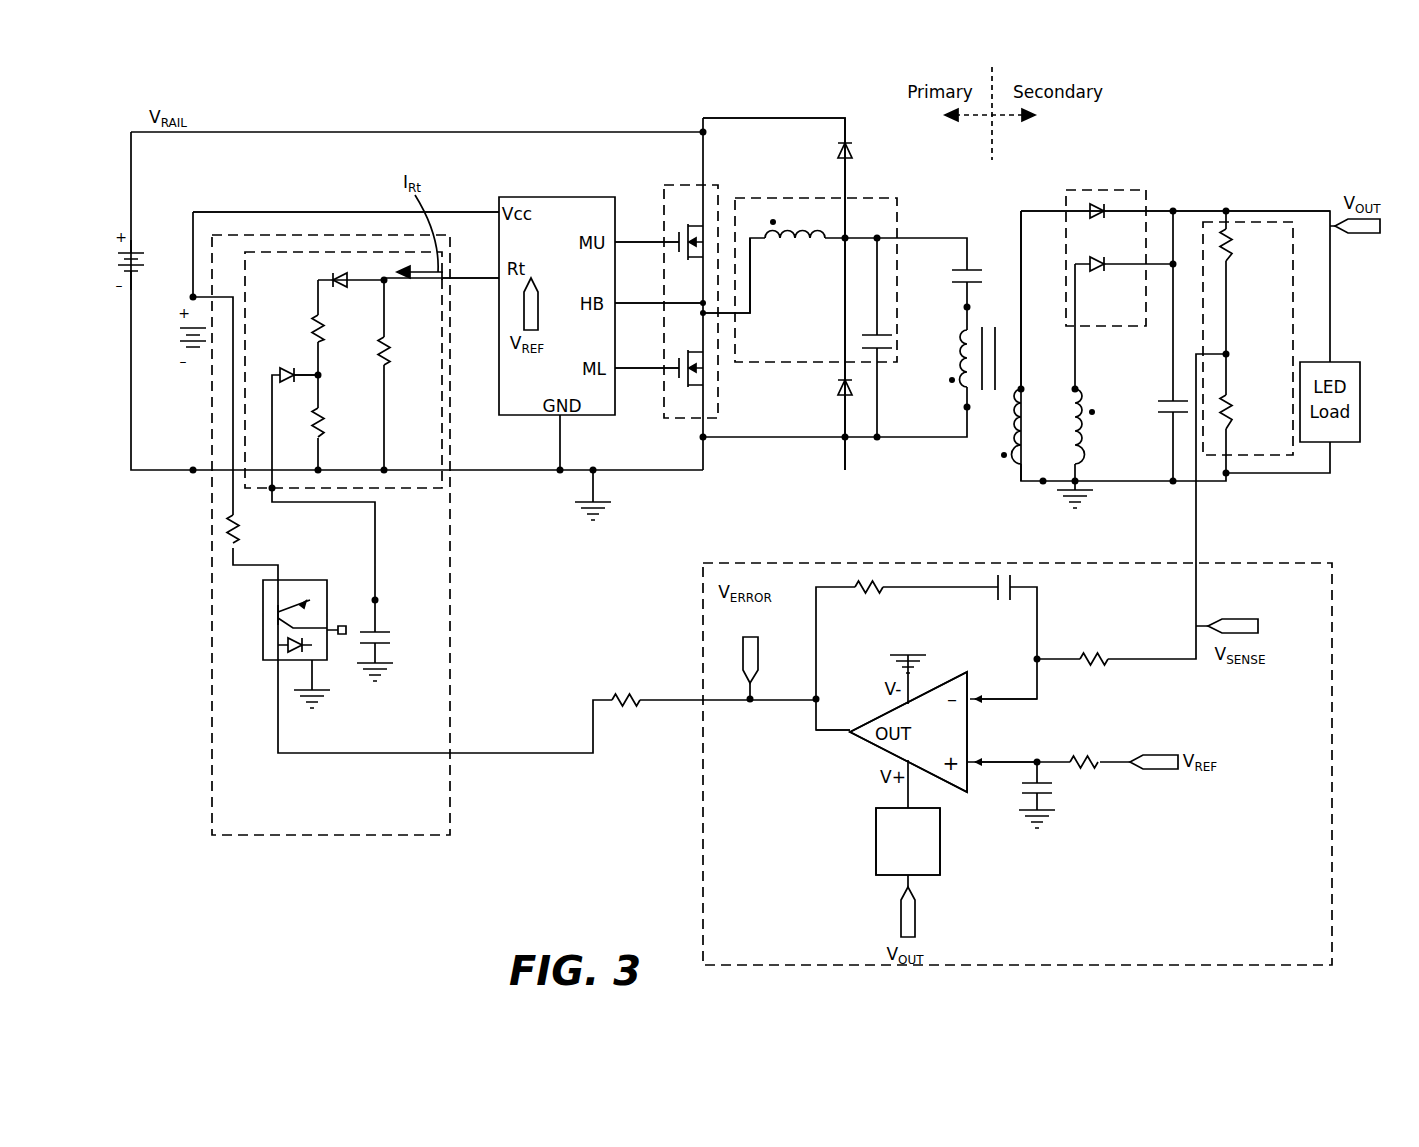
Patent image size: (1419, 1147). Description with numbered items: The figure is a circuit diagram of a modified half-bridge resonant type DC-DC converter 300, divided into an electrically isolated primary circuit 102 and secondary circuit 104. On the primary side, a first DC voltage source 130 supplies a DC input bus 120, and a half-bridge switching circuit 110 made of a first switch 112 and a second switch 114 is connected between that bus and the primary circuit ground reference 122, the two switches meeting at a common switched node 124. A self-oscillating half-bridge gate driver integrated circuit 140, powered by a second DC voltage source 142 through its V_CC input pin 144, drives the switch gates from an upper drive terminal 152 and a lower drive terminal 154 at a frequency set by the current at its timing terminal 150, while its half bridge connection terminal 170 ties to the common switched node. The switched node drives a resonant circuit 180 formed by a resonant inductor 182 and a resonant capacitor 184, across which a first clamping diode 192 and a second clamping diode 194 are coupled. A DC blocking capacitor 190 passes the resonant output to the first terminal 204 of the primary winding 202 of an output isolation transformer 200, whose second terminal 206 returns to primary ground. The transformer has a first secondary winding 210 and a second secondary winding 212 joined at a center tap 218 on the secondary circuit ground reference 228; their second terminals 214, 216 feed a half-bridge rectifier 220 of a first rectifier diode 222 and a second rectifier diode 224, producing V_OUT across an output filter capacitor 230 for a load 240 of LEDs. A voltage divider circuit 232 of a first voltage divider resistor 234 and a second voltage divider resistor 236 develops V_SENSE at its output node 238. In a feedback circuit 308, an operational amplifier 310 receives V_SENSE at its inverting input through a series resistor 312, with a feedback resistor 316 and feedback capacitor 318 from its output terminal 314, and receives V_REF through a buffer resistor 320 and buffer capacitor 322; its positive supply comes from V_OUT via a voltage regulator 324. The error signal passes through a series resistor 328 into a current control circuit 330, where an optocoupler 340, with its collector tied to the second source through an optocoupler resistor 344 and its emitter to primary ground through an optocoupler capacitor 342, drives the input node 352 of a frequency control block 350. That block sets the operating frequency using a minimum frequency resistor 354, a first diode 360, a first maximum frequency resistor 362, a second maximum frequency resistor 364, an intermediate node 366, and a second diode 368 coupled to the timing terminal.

The primary circuit 102 is at (954, 230).
The secondary circuit 104 is at (1030, 211).
The half-bridge switching circuit 110 is at (687, 183).
The first switch 112 is at (705, 248).
The second switch 114 is at (708, 383).
The DC input bus 120 is at (297, 130).
The primary circuit ground reference 122 is at (605, 515).
The common switched node 124 is at (706, 306).
The first DC voltage source 130 is at (124, 268).
The self-oscillating half-bridge gate driver integrated circuit 140 is at (552, 197).
The second DC voltage source 142 is at (184, 347).
The V_CC input pin 144 is at (497, 212).
The timing terminal 150 is at (497, 278).
The upper drive terminal 152 is at (620, 242).
The lower drive terminal 154 is at (617, 370).
The half bridge connection terminal 170 is at (617, 305).
The resonant circuit 180 is at (812, 198).
The resonant inductor 182 is at (780, 248).
The resonant capacitor 184 is at (885, 335).
The DC blocking capacitor 190 is at (973, 270).
The first clamping diode 192 is at (852, 152).
The second clamping diode 194 is at (840, 397).
The output isolation transformer 200 is at (985, 413).
The primary winding 202 is at (962, 350).
The first terminal of the primary winding 204 is at (965, 308).
The second terminal of the primary winding 206 is at (965, 408).
The first secondary winding 210 is at (1028, 435).
The second secondary winding 212 is at (1080, 425).
The second terminal of the first secondary winding 214 is at (1024, 387).
The second terminal of the second secondary winding 216 is at (1078, 387).
The center tap 218 is at (1041, 485).
The half-bridge rectifier 220 is at (1125, 190).
The first rectifier diode 222 is at (1097, 216).
The second rectifier diode 224 is at (1097, 270).
The secondary circuit ground reference 228 is at (918, 658).
The output filter capacitor 230 is at (1165, 400).
The voltage divider circuit 232 is at (1253, 222).
The first voltage divider resistor 234 is at (1232, 252).
The second voltage divider resistor 236 is at (1232, 415).
The output node of the voltage divider 238 is at (1228, 352).
The load 240 is at (1335, 362).
The modified half-bridge resonant type DC-DC converter 300 is at (1222, 128).
The feedback circuit 308 is at (1305, 563).
The operational amplifier 310 is at (968, 730).
The series resistor 312 is at (1083, 655).
The output terminal 314 is at (850, 733).
The feedback resistor 316 is at (862, 600).
The feedback capacitor 318 is at (1000, 605).
The buffer resistor 320 is at (1095, 758).
The buffer capacitor 322 is at (1015, 784).
The voltage regulator 324 is at (888, 860).
The series resistor 328 is at (615, 697).
The current control circuit 330 is at (365, 835).
The optocoupler 340 is at (263, 615).
The optocoupler capacitor 342 is at (385, 632).
The optocoupler resistor 344 is at (238, 540).
The frequency control block 350 is at (283, 252).
The input node 352 is at (270, 490).
The minimum frequency resistor 354 is at (390, 348).
The first diode 360 is at (347, 284).
The first maximum frequency resistor 362 is at (326, 318).
The second maximum frequency resistor 364 is at (326, 422).
The node 366 is at (321, 378).
The second diode 368 is at (287, 370).